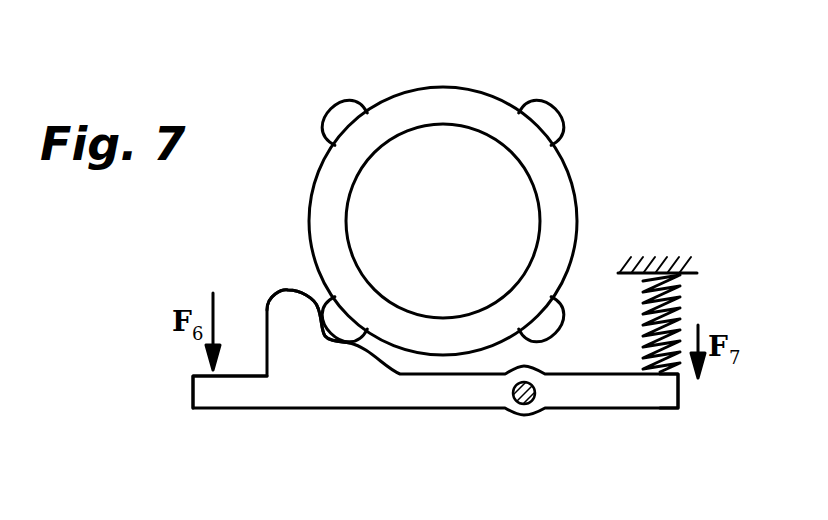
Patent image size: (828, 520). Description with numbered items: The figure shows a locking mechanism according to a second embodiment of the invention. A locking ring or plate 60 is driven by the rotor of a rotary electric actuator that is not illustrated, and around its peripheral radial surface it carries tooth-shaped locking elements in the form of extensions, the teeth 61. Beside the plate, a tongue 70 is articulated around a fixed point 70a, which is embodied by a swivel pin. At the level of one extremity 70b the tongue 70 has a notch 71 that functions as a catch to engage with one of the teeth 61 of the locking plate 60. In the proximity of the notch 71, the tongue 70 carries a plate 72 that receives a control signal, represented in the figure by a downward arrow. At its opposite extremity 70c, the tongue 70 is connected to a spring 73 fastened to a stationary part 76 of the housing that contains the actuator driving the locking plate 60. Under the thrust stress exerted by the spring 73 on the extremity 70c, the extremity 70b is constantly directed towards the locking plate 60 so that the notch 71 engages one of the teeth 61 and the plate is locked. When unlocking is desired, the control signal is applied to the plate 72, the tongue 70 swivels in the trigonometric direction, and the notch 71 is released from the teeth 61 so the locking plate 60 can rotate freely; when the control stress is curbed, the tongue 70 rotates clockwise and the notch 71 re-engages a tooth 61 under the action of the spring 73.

The locking plate 60 is at (467, 105).
The teeth 61 is at (338, 110).
The tongue 70 is at (395, 395).
The fixed point 70a is at (533, 403).
The extremity 70b is at (288, 295).
The extremity 70c is at (667, 393).
The notch 71 is at (321, 341).
The plate 72 is at (207, 393).
The spring 73 is at (668, 312).
The stationary part 76 is at (677, 263).